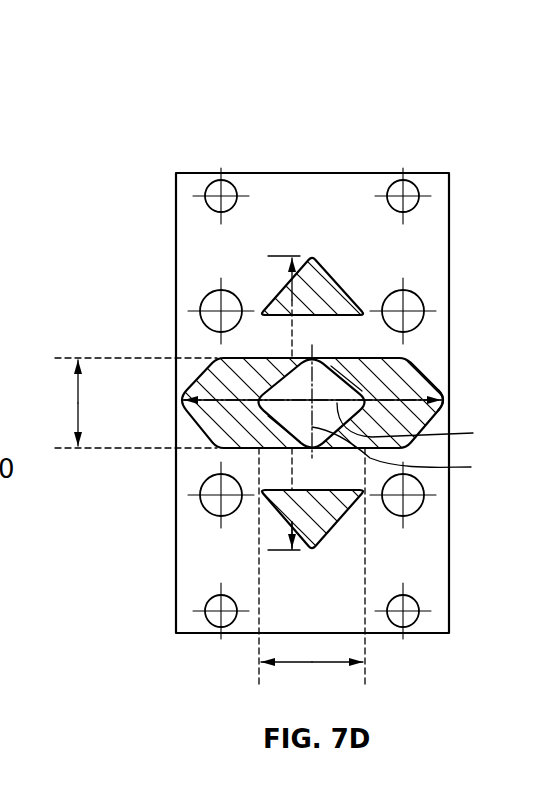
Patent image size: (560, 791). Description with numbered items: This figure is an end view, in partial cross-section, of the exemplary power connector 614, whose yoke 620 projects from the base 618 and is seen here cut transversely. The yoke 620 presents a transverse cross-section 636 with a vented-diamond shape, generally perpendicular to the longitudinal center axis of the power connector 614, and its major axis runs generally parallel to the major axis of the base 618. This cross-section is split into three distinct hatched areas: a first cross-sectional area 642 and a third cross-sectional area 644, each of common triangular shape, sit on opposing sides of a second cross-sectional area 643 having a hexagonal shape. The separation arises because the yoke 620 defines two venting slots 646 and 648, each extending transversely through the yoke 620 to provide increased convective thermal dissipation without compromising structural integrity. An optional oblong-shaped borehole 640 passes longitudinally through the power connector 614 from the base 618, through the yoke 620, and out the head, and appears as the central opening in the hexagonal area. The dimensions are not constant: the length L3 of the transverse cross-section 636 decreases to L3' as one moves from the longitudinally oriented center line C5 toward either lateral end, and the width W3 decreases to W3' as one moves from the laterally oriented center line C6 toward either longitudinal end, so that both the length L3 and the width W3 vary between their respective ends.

The power connector 614 is at (218, 133).
The base 618 is at (174, 195).
The yoke 620 is at (444, 351).
The transverse cross-section 636 is at (411, 349).
The second cross-sectional area 643 is at (431, 386).
The venting slot 648 is at (214, 343).
The venting slot 646 is at (214, 463).
The oblong-shaped borehole 640 is at (252, 432).
The third cross-sectional area 644 is at (350, 292).
The first cross-sectional area 642 is at (323, 540).
The laterally oriented center line C6 is at (423, 425).
The longitudinally oriented center line C5 is at (410, 454).
The length L3 is at (266, 384).
The width W3 is at (273, 383).
The reduced length L3' is at (108, 403).
The reduced width W3' is at (286, 585).